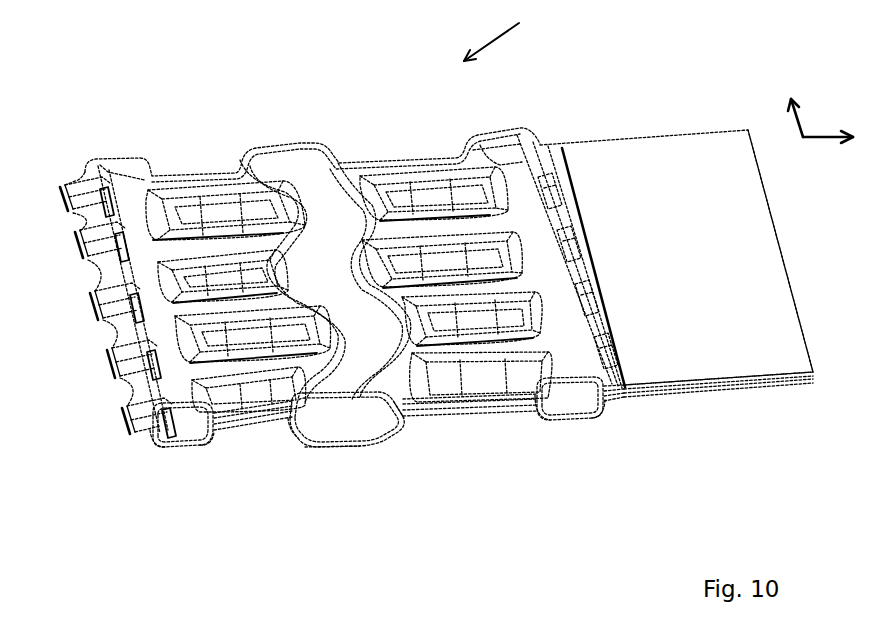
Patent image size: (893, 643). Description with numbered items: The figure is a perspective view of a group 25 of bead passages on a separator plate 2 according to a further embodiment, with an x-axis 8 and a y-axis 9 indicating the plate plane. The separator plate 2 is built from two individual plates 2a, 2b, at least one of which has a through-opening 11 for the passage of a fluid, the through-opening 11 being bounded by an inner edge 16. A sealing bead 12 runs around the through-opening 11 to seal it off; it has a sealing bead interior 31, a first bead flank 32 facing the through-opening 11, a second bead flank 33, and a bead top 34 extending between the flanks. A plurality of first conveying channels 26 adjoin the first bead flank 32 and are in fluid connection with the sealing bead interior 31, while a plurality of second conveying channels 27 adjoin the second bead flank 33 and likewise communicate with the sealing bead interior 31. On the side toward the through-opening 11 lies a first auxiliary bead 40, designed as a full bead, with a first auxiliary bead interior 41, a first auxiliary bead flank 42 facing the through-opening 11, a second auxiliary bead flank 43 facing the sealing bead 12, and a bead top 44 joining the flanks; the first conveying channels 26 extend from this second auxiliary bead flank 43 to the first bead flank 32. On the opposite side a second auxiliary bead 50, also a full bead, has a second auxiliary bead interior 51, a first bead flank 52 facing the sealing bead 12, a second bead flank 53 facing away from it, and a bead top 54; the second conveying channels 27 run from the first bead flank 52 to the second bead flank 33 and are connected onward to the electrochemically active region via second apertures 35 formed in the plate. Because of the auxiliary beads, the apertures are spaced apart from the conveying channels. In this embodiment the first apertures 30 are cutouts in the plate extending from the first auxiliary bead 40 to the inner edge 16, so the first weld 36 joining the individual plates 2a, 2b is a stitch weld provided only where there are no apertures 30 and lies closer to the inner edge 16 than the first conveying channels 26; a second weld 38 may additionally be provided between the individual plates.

The group of bead passages 25 is at (503, 34).
The bead top 54 is at (493, 152).
The separator plate 2 is at (689, 153).
The individual plate 2a is at (753, 350).
The individual plate 2b is at (763, 382).
The x-axis 8 is at (826, 138).
The y-axis 9 is at (800, 131).
The through-opening 11 is at (38, 401).
The sealing bead 12 is at (292, 162).
The inner edge 16 is at (125, 425).
The first conveying channels 26 is at (188, 187).
The second conveying channels 27 is at (420, 168).
The first aperture 30 is at (115, 265).
The sealing bead interior 31 is at (350, 422).
The first bead flank 32 is at (303, 435).
The second bead flank 33 is at (400, 423).
The bead top 34 is at (328, 447).
The second aperture 35 is at (567, 285).
The first weld 36 is at (102, 313).
The second weld 38 is at (622, 368).
The first auxiliary bead 40 is at (130, 188).
The first auxiliary bead interior 41 is at (190, 427).
The first auxiliary bead flank 42 is at (165, 442).
The second auxiliary bead flank 43 is at (217, 437).
The bead top 44 is at (115, 168).
The second auxiliary bead 50 is at (513, 222).
The second auxiliary bead interior 51 is at (560, 398).
The first bead flank 52 is at (538, 410).
The second bead flank 53 is at (603, 410).